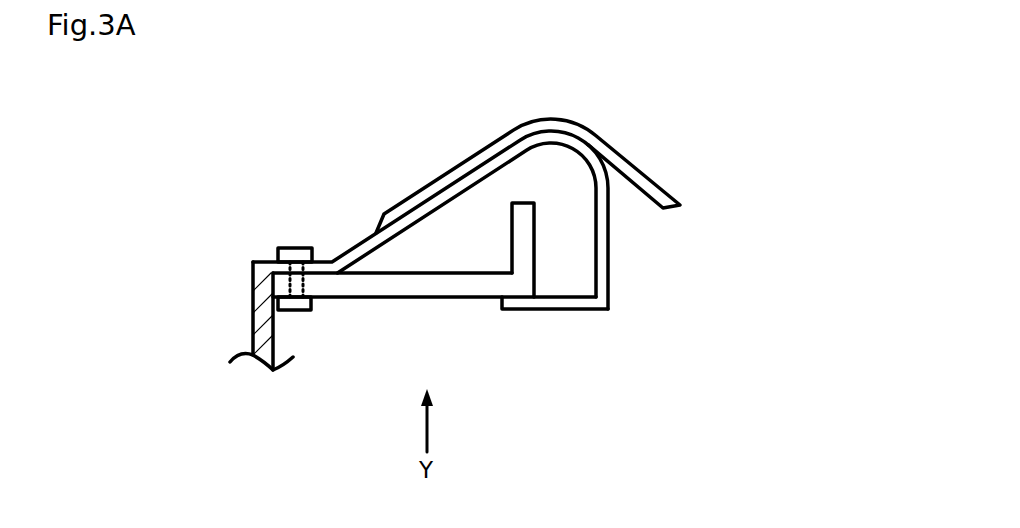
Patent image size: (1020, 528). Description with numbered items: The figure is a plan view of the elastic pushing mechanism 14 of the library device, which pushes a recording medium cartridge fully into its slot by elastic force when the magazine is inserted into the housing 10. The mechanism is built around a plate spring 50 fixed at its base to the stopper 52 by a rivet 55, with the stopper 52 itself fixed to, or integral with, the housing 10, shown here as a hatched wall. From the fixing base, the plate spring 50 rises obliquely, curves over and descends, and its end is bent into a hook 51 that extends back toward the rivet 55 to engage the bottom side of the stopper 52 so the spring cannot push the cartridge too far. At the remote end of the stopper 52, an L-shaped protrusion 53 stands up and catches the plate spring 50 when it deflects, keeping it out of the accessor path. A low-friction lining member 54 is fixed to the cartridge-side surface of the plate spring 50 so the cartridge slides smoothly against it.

The housing 10 is at (262, 325).
The elastic pushing mechanism 14 is at (688, 108).
The plate spring 50 is at (602, 240).
The hook 51 is at (558, 303).
The stopper 52 is at (368, 285).
The protrusion 53 is at (522, 207).
The lining member 54 is at (643, 177).
The rivet 55 is at (293, 248).